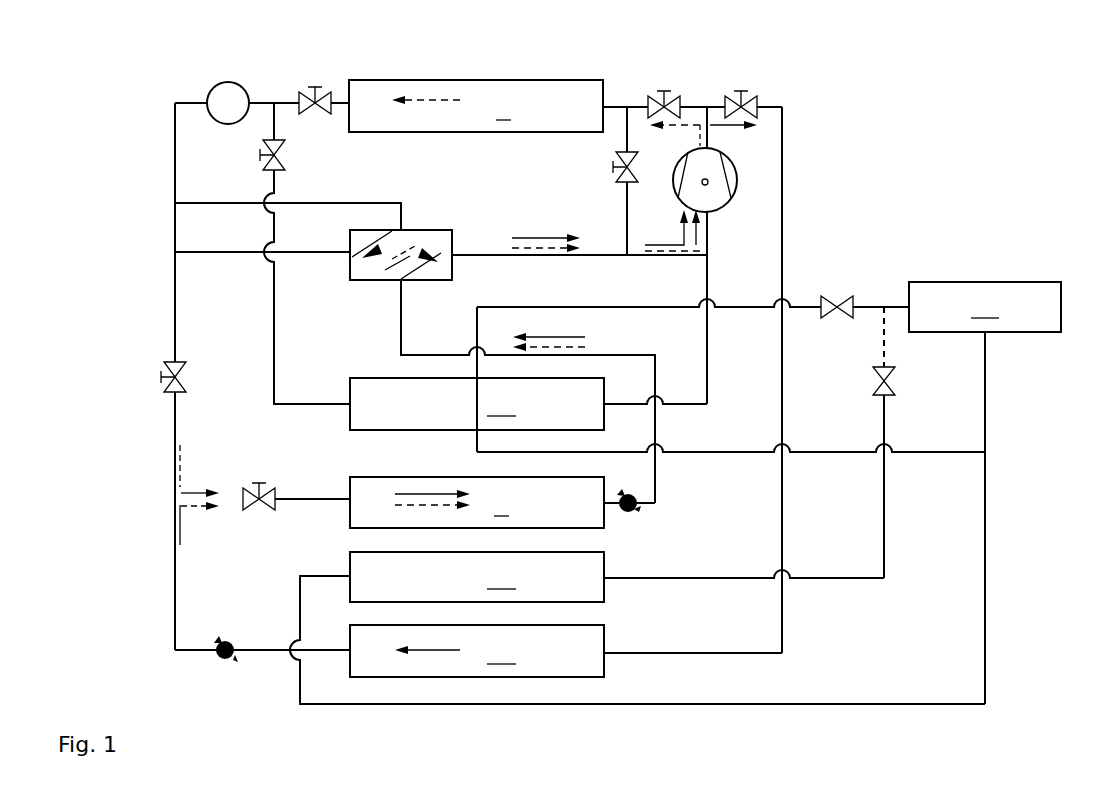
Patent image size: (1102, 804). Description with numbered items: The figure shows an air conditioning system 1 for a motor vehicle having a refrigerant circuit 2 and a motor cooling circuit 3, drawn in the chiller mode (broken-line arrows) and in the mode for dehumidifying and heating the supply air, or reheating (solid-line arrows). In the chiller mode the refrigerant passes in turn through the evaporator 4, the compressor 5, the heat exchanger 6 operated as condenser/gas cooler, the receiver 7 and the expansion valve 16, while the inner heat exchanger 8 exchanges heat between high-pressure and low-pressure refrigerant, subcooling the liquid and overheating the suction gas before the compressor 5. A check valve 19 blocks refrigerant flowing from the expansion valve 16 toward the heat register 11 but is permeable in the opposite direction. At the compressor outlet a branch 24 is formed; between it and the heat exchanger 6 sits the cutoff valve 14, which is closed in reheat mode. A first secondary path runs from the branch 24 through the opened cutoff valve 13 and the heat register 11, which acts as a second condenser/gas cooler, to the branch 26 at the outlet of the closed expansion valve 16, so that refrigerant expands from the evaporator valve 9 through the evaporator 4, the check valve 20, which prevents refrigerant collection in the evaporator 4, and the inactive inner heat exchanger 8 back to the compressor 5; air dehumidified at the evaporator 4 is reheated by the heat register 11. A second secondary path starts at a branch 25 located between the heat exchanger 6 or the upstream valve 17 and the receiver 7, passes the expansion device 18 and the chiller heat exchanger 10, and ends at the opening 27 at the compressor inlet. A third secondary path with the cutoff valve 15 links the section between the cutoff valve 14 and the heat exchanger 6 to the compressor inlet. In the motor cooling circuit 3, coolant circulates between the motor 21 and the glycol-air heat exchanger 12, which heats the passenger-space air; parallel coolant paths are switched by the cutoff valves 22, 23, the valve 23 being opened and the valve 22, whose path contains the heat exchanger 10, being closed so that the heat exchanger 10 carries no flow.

The air conditioning system 1 is at (130, 283).
The refrigerant circuit 2 is at (783, 193).
The motor cooling circuit 3 is at (988, 580).
The evaporator 4 is at (477, 502).
The compressor 5 is at (708, 180).
The heat exchanger 6 is at (476, 106).
The receiver 7 is at (207, 100).
The inner heat exchanger 8 is at (432, 233).
The evaporator valve 9 is at (244, 491).
The heat exchanger 10 is at (477, 404).
The heat exchanger 11 is at (477, 651).
The heat exchanger 12 is at (477, 577).
The cutoff valve 13 is at (755, 98).
The cutoff valve 14 is at (645, 98).
The cutoff valve 15 is at (617, 180).
The expansion valve 16 is at (164, 391).
The valve 17 is at (330, 97).
The expansion device 18 is at (284, 170).
The check valve 19 is at (235, 662).
The check valve 20 is at (640, 512).
The motor 21 is at (985, 307).
The cutoff valve 22 is at (852, 298).
The cutoff valve 23 is at (893, 368).
The branch 24 is at (704, 103).
The branch 25 is at (274, 100).
The branch 26 is at (170, 498).
The opening 27 is at (709, 256).